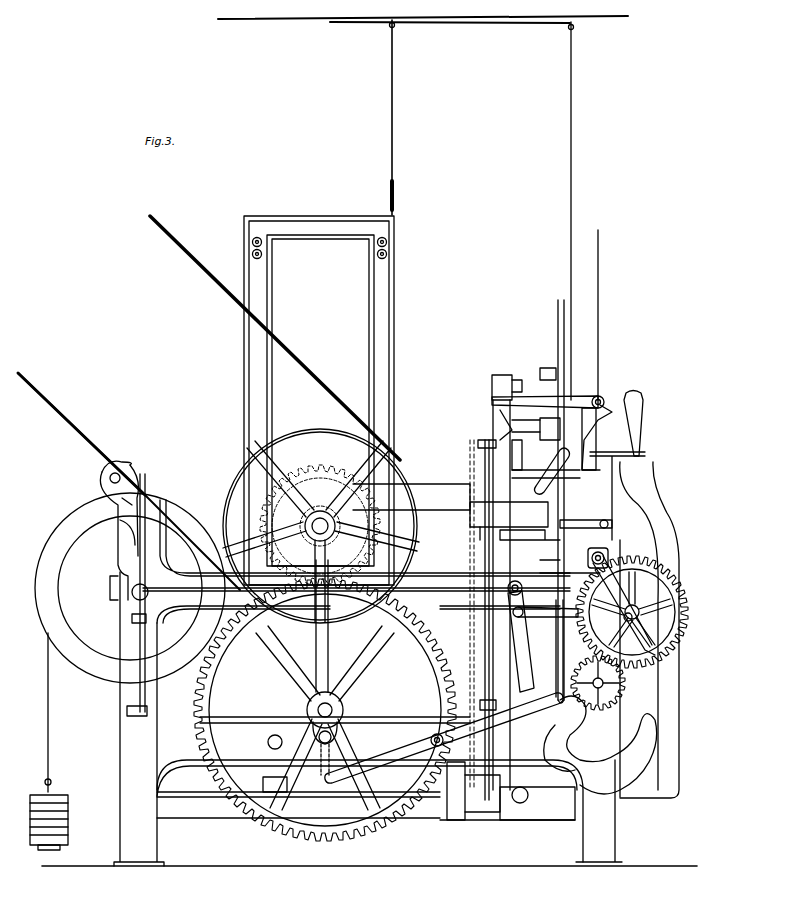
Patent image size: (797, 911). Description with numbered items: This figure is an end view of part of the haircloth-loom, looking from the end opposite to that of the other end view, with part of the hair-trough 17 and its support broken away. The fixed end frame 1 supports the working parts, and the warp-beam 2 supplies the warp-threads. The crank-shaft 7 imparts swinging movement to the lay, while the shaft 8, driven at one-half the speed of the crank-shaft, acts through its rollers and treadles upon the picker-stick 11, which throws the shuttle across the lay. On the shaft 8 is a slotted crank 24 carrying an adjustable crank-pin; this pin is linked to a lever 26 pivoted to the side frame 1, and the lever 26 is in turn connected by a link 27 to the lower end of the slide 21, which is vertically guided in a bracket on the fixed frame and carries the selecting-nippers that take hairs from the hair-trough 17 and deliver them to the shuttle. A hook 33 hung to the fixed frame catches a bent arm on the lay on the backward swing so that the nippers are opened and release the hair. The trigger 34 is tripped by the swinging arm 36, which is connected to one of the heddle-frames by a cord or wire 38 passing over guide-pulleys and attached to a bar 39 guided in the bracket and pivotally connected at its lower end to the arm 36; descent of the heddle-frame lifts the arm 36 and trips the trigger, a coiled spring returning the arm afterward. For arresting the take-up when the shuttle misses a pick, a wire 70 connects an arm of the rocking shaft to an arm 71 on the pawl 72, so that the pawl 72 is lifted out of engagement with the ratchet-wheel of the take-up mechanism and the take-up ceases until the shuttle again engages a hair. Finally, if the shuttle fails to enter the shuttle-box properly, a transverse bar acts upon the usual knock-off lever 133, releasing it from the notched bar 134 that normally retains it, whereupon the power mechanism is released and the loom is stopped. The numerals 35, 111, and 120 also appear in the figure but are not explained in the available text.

The end frame 1 is at (396, 541).
The warp-beam 2 is at (130, 588).
The crank-shaft 7 is at (305, 533).
The shaft 8 is at (352, 700).
The picker-stick 11 is at (489, 651).
The hair-trough 17 is at (456, 512).
The slide 21 is at (556, 370).
The slotted crank 24 is at (314, 776).
The lever 26 is at (410, 746).
The link 27 is at (556, 632).
The hook 33 is at (602, 409).
The trigger 34 is at (540, 422).
The arm 35 is at (536, 400).
The swinging arm 36 is at (536, 486).
The cord or wire 38 is at (571, 300).
The bar 39 is at (592, 397).
The wire 70 is at (560, 567).
The arm 71 is at (553, 608).
The pawl 72 is at (560, 618).
The pallet lever 111 is at (616, 524).
The rod 120 is at (598, 297).
The knock-off lever 133 is at (676, 547).
The notched bar 134 is at (641, 454).